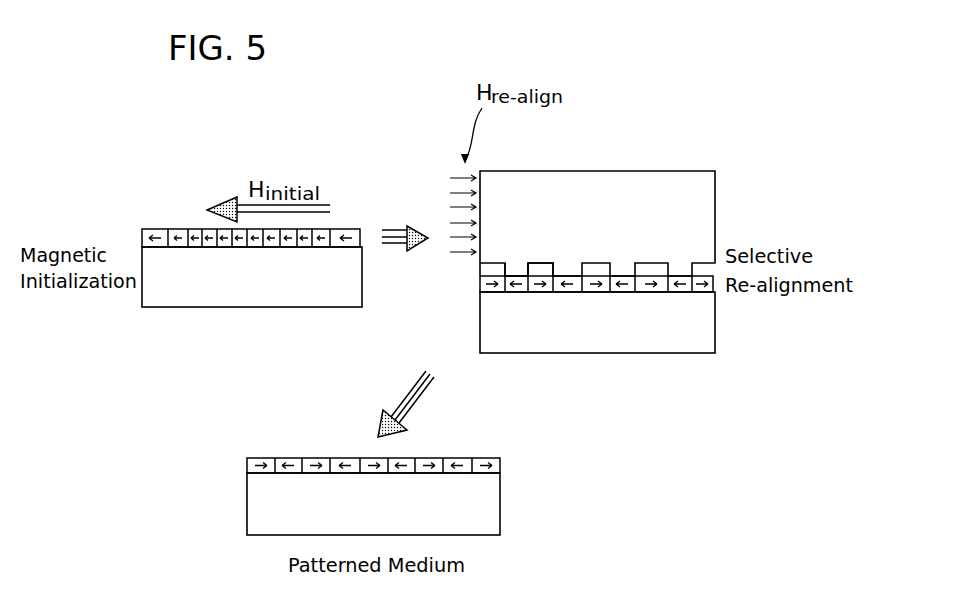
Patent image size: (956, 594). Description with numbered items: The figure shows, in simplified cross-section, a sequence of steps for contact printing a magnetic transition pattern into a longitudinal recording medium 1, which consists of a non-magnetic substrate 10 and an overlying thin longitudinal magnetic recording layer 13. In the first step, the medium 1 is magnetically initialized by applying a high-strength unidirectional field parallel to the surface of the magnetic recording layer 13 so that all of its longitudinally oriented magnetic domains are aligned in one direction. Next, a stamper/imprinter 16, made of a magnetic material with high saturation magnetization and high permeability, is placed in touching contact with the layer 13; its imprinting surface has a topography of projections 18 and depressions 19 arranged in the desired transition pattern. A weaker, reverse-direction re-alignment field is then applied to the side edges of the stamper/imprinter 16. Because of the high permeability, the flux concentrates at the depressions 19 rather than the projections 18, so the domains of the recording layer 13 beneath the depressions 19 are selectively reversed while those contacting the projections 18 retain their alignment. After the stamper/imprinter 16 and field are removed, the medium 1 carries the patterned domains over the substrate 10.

The longitudinal recording medium 1 is at (424, 351).
The non-magnetic substrate 10 is at (268, 291).
The magnetic recording layer 13 is at (347, 230).
The stamper/imprinter 16 is at (721, 193).
The projections 18 is at (520, 270).
The depressions 19 is at (543, 263).